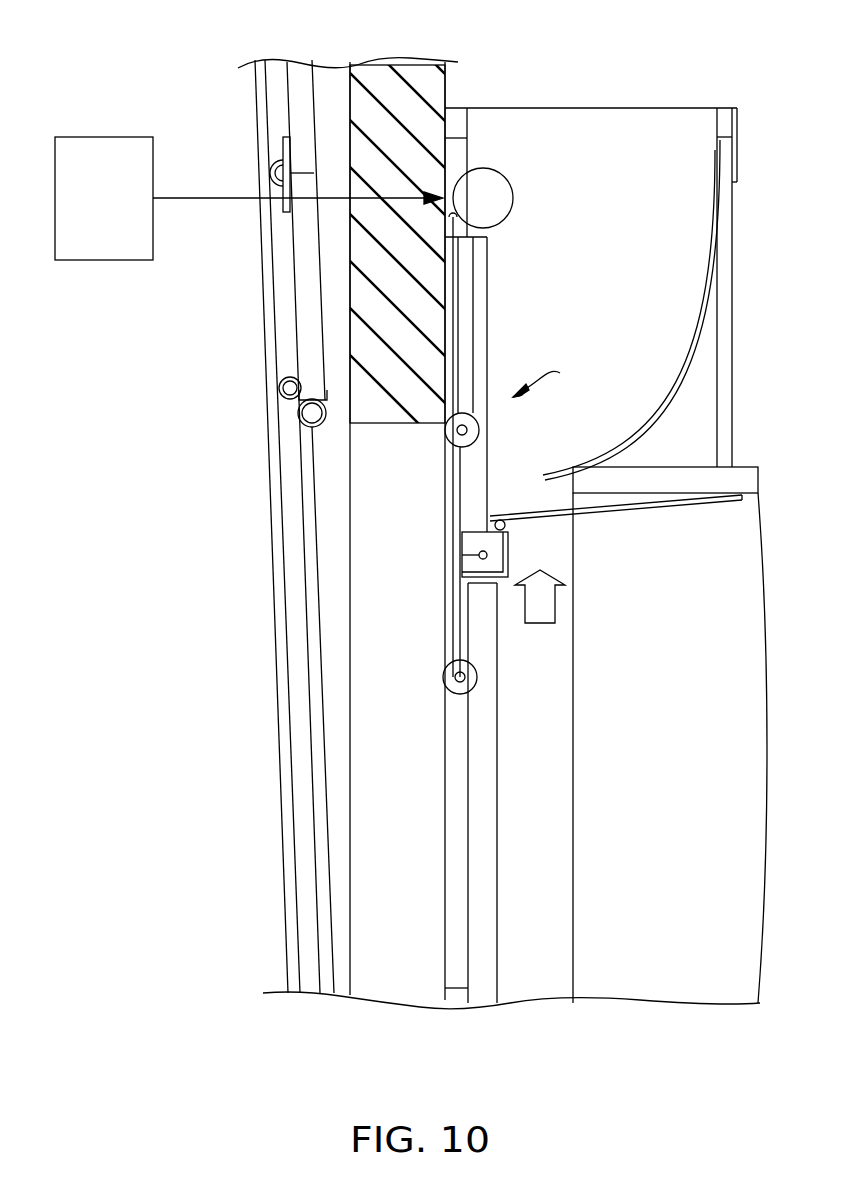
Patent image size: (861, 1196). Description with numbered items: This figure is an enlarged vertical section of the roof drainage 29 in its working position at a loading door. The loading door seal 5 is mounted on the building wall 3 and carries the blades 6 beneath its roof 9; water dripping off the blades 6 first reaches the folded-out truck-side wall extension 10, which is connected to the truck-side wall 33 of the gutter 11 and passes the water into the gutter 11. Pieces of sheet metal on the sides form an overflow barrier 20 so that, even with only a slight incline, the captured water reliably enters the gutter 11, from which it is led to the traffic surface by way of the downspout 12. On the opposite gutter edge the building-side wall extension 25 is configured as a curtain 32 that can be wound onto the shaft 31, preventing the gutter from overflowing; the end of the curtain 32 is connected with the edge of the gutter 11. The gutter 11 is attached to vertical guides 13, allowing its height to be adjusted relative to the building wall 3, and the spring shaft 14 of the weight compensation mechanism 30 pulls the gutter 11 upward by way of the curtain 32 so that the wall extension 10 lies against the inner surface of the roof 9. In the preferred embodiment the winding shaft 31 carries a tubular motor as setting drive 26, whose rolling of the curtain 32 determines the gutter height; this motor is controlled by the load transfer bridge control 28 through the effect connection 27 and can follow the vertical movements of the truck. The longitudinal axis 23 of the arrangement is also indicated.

The building wall 3 is at (402, 73).
The loading door seal 5 is at (490, 108).
The blade 6 is at (682, 382).
The roof 9 is at (742, 478).
The truck-side wall extension 10 is at (653, 508).
The gutter 11 is at (495, 563).
The downspout 12 is at (480, 908).
The vertical guides 13 is at (447, 607).
The spring shaft 14 is at (574, 143).
The overflow barrier 20 is at (468, 544).
The longitudinal axis 23 is at (479, 555).
The building-side wall extension 25 is at (531, 384).
The setting drive 26 is at (574, 143).
The effect connection 27 is at (227, 198).
The load transfer bridge control 28 is at (105, 137).
The roof drainage 29 is at (547, 373).
The weight compensation mechanism 30 is at (574, 143).
The shaft 31 is at (495, 195).
The curtain 32 is at (470, 320).
The truck-side wall 33 is at (508, 558).